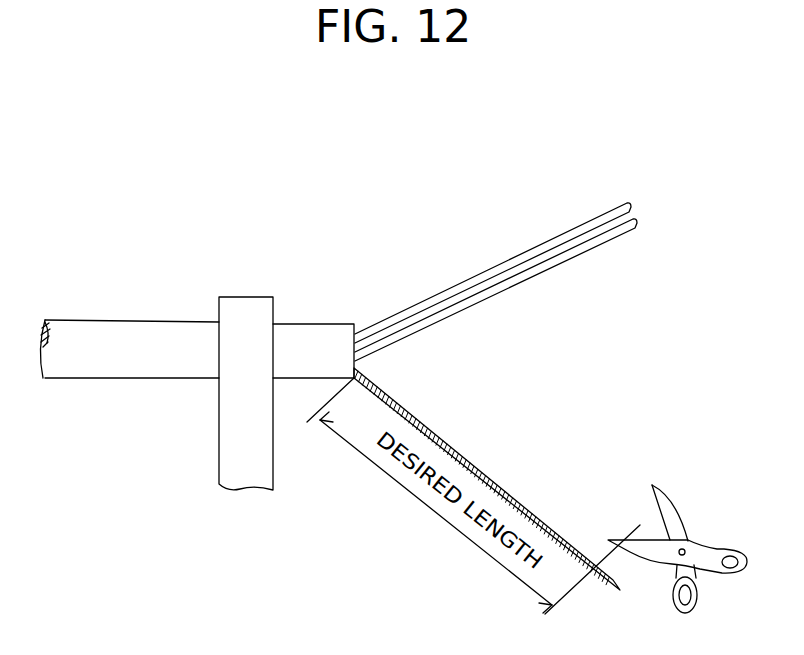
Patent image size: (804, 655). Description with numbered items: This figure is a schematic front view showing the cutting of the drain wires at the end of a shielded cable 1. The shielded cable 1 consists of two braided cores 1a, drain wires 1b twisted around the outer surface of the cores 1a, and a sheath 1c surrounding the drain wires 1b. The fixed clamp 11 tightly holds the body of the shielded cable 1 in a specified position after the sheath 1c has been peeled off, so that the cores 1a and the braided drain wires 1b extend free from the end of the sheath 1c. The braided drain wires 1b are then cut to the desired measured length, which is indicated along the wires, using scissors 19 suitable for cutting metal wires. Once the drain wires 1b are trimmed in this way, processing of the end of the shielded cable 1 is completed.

The shielded cable 1 is at (443, 191).
The cores 1a is at (507, 287).
The drain wires 1b is at (397, 393).
The sheath 1c is at (307, 333).
The fixed clamp 11 is at (228, 441).
The scissors 19 is at (675, 525).